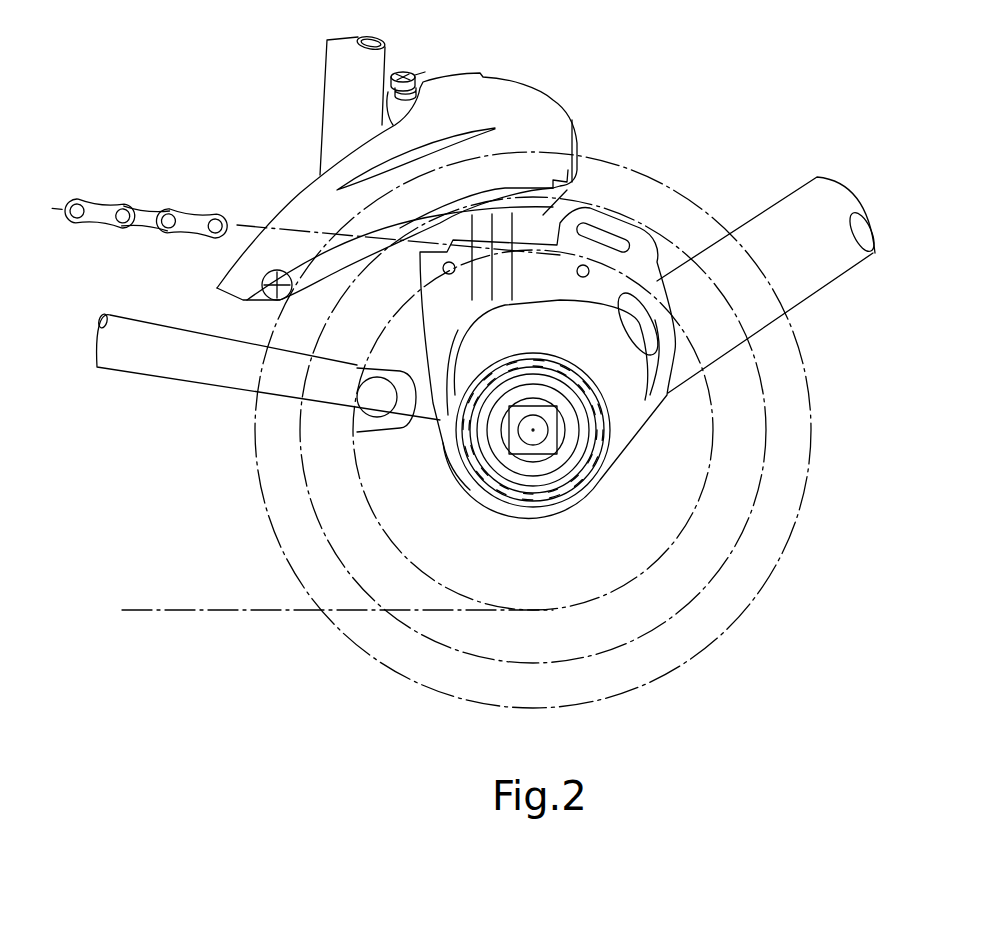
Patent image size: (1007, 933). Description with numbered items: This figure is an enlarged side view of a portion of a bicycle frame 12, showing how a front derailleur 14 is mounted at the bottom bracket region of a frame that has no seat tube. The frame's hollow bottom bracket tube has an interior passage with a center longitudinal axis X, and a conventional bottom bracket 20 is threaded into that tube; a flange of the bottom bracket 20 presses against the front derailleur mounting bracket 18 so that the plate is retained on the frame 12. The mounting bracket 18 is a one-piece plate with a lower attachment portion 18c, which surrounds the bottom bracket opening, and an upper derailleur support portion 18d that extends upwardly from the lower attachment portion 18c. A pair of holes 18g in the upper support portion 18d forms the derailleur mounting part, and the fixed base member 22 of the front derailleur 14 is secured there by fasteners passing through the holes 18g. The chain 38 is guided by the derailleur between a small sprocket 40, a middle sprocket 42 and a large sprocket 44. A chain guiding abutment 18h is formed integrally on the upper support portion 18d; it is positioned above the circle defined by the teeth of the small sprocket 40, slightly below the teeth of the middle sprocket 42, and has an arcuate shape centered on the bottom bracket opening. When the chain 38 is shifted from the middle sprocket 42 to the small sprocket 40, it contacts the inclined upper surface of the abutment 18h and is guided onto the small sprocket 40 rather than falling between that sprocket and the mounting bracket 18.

The frame 12 is at (745, 220).
The front derailleur 14 is at (520, 88).
The front derailleur mounting bracket 18 is at (588, 341).
The lower attachment portion 18c is at (450, 468).
The upper derailleur support portion 18d is at (443, 272).
The holes 18g is at (577, 275).
The chain guiding abutment 18h is at (623, 230).
The bottom bracket 20 is at (570, 497).
The fixed base member 22 is at (543, 215).
The chain 38 is at (187, 210).
The small sprocket 40 is at (367, 507).
The middle sprocket 42 is at (330, 550).
The large sprocket 44 is at (300, 587).
The center longitudinal axis X is at (533, 430).